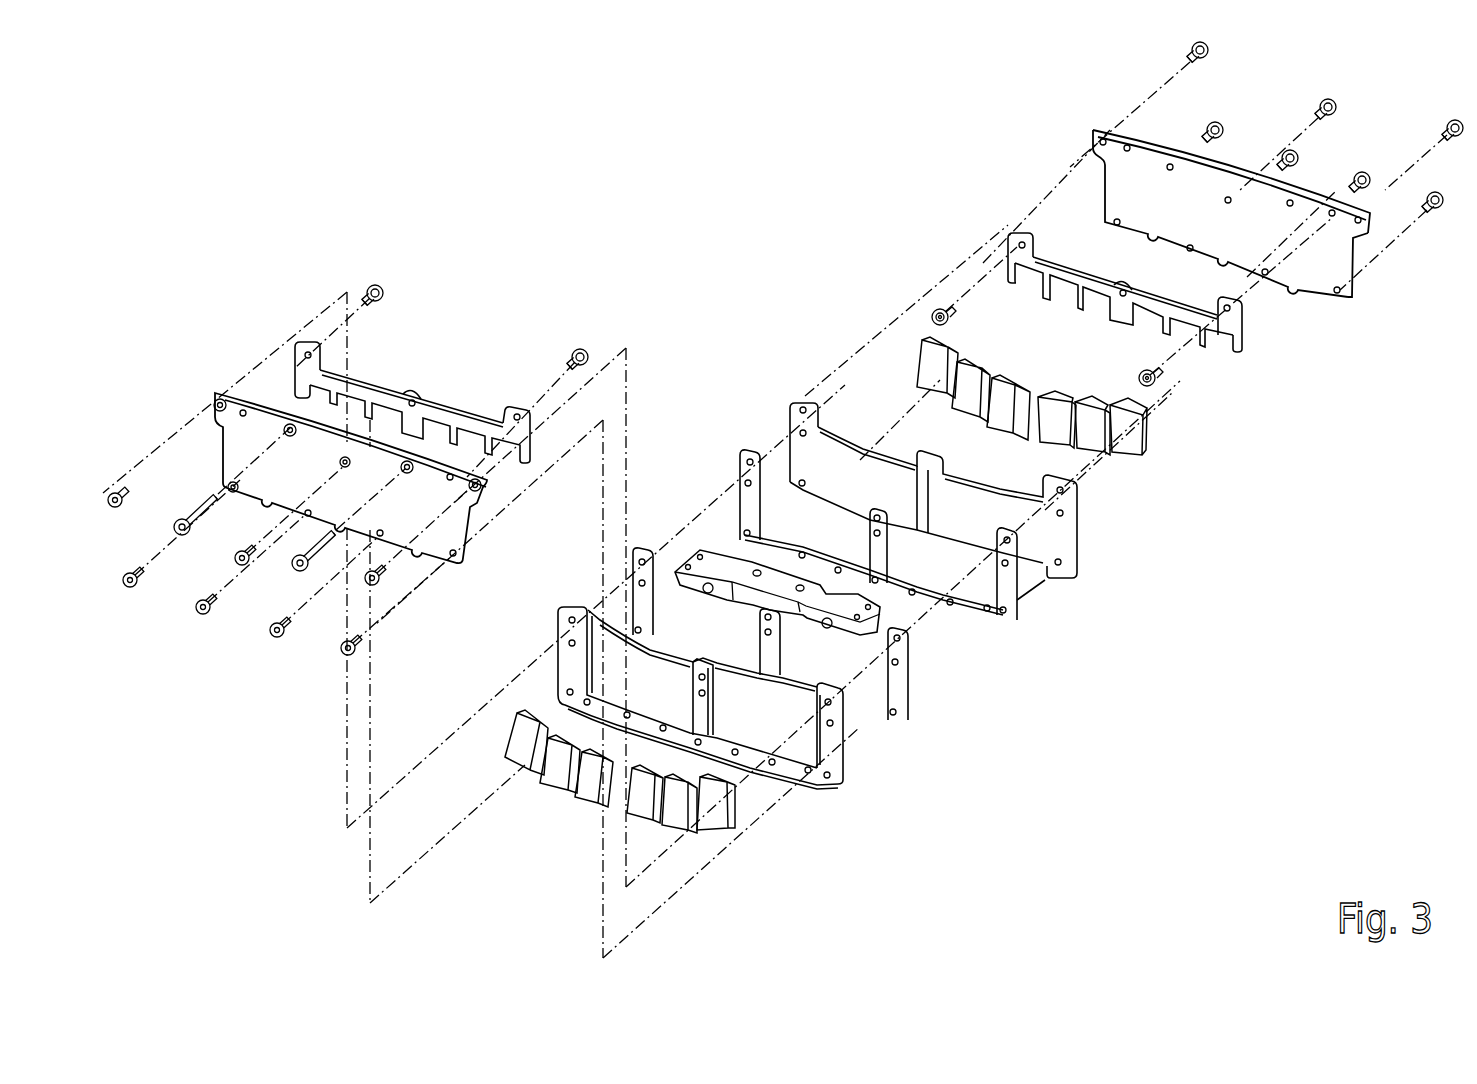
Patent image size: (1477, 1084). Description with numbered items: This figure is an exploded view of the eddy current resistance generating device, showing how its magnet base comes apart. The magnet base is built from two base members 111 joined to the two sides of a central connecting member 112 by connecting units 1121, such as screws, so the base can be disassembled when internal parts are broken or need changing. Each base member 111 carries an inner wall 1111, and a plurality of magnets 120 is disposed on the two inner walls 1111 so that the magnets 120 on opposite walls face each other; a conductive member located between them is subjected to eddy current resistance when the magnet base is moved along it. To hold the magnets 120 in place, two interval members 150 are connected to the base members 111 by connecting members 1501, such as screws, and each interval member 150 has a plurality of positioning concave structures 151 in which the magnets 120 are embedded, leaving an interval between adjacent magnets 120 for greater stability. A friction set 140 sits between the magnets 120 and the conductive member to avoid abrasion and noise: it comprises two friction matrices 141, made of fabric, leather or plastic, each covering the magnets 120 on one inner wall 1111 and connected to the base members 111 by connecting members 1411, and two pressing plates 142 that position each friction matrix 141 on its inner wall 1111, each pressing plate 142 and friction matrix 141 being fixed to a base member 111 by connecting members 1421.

The base member 111 is at (841, 315).
The inner wall 1111 is at (1343, 260).
The connecting member 112 is at (710, 563).
The connecting unit 1121 is at (202, 522).
The magnet 120 is at (733, 807).
The friction set 140 is at (906, 620).
The friction matrix 141 is at (1075, 538).
The pressing plate 142 is at (885, 599).
The connecting member 1411 is at (205, 609).
The connecting member 1421 is at (115, 492).
The interval member 150 is at (771, 348).
The positioning concave structure 151 is at (1317, 350).
The connecting member 1501 is at (940, 309).